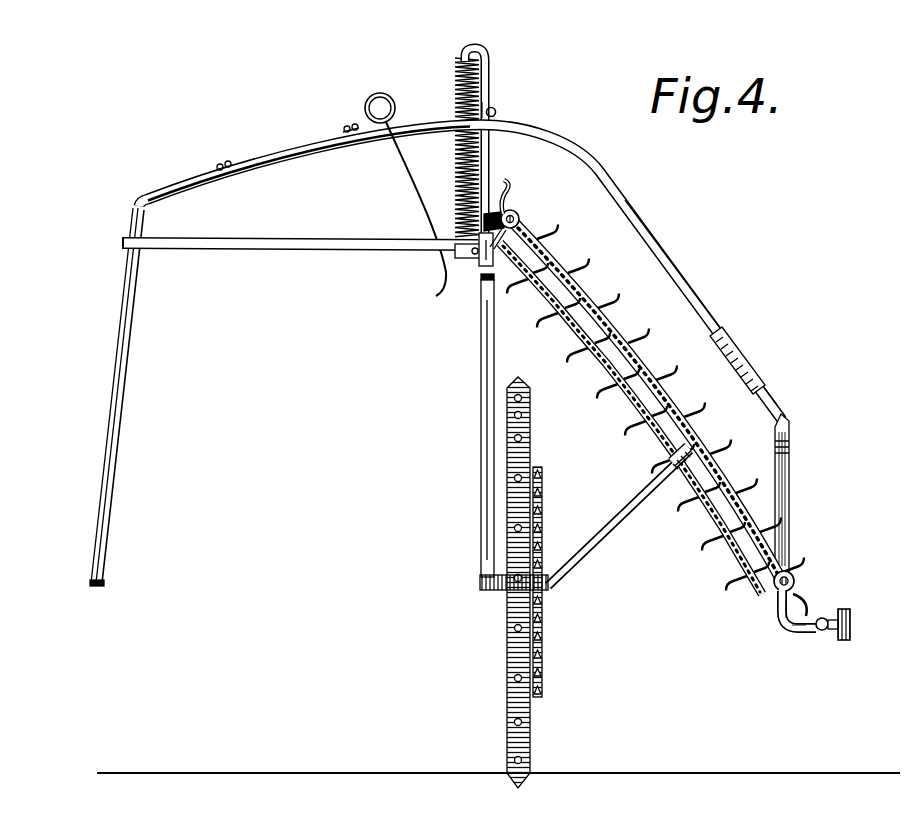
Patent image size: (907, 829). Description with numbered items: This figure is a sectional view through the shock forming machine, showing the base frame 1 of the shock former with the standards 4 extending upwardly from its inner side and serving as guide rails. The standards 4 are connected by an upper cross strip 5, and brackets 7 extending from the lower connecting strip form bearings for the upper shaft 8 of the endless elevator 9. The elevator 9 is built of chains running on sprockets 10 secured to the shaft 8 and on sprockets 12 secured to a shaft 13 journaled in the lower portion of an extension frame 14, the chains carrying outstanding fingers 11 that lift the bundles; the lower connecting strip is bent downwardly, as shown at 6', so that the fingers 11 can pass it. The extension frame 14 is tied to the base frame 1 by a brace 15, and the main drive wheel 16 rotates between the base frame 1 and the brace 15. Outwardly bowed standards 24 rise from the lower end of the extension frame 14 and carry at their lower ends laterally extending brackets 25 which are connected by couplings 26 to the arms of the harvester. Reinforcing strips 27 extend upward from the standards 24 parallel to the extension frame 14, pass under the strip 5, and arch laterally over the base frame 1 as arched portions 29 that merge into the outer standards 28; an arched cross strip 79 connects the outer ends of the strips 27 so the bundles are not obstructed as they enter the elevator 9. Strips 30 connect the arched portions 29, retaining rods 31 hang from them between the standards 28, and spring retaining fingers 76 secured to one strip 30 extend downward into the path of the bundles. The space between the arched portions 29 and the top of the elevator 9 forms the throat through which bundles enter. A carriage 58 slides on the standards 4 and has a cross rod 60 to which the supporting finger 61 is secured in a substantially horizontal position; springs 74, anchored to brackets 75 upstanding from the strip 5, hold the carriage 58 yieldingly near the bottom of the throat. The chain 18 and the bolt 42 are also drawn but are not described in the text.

The base frame 1 is at (100, 586).
The standards 4 is at (487, 430).
The upper cross strip 5 is at (491, 108).
The downwardly bent portion of the strip 6' is at (469, 311).
The brackets 7 is at (505, 192).
The upper shaft 8 is at (517, 215).
The endless elevator 9 is at (566, 268).
The sprockets 10 is at (528, 228).
The outstanding fingers 11 is at (597, 275).
The sprockets 12 is at (792, 569).
The shaft 13 is at (779, 598).
The extension frame 14 is at (762, 523).
The brace 15 is at (636, 512).
The main drive wheel 16 is at (508, 690).
The chain 18 is at (541, 520).
The outwardly bowed standards 24 is at (791, 482).
The laterally extending brackets 25 is at (800, 637).
The couplings 26 is at (851, 618).
The reinforcing strips 27 is at (656, 255).
The outer standards 28 is at (120, 333).
The arched portions 29 is at (286, 156).
The strips 30 is at (350, 125).
The retaining rods 31 is at (168, 191).
The bolt 42 is at (496, 113).
The carriage 58 is at (458, 259).
The cross rod 60 is at (479, 262).
The supporting finger 61 is at (320, 250).
The springs 74 is at (455, 83).
The brackets 75 is at (490, 62).
The spring retaining fingers 76 is at (412, 183).
The arched cross strip 79 is at (757, 385).